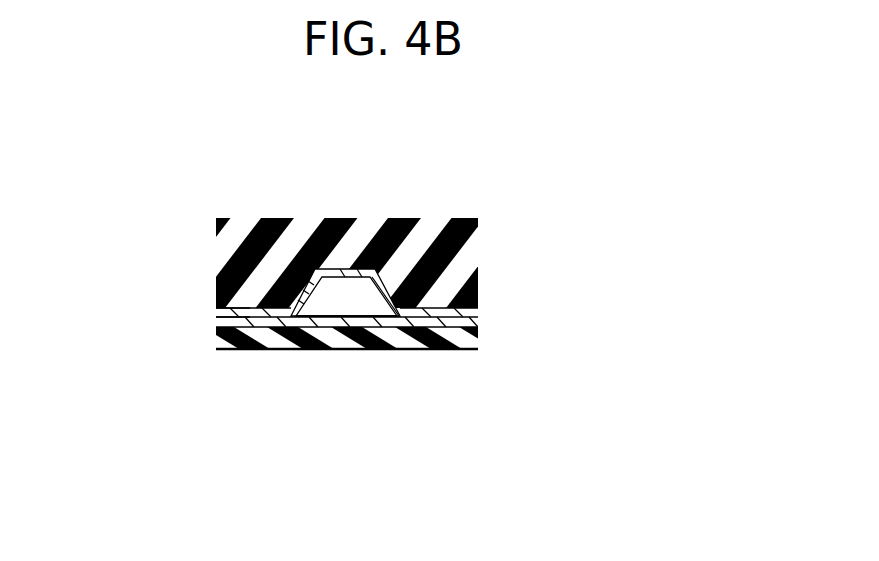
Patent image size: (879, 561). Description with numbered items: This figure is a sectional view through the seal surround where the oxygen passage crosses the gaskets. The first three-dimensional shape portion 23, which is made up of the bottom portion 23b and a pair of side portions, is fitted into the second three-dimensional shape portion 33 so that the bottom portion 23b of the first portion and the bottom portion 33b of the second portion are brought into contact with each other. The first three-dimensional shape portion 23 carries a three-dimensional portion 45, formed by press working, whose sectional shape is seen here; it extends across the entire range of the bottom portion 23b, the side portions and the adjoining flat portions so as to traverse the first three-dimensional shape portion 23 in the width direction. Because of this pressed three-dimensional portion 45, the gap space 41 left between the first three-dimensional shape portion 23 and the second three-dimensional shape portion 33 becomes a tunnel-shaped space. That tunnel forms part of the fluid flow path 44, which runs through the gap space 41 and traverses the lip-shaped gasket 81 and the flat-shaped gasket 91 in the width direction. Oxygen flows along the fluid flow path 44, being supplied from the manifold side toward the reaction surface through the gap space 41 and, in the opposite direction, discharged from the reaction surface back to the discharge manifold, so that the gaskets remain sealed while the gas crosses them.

The first three-dimensional shape portion 23 is at (477, 312).
The bottom portion 23b is at (213, 312).
The second three-dimensional shape portion 33 is at (477, 323).
The bottom portion 33b is at (213, 323).
The gap space 41 is at (332, 303).
The fluid flow path 44 is at (368, 305).
The three-dimensional portion 45 is at (338, 269).
The lip-shaped gasket 81 is at (367, 228).
The flat-shaped gasket 91 is at (352, 338).